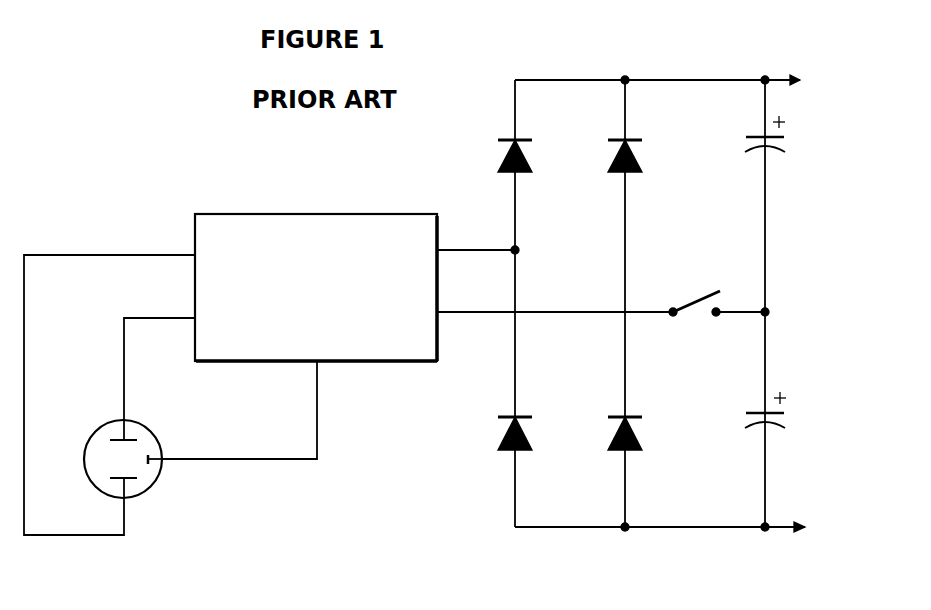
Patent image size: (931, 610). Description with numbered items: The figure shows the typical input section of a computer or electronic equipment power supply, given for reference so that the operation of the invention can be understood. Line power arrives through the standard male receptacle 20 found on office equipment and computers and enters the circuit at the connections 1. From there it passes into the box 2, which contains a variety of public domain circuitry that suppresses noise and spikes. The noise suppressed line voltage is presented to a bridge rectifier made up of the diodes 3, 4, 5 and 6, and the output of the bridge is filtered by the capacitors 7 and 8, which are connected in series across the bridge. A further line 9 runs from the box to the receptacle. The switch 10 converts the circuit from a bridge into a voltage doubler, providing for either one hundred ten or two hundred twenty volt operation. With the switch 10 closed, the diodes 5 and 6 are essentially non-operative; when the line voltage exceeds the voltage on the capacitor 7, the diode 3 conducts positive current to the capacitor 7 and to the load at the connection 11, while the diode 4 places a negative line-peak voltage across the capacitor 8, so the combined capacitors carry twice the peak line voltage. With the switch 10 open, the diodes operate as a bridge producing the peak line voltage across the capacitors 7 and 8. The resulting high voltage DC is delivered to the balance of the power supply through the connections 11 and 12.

The connections 1 is at (157, 257).
The box 2 is at (237, 214).
The diode 3 is at (522, 152).
The diode 4 is at (530, 432).
The diode 5 is at (633, 152).
The diode 6 is at (638, 432).
The capacitor 7 is at (752, 135).
The capacitor 8 is at (752, 411).
The control line 9 is at (317, 459).
The switch 10 is at (700, 301).
The connection 11 is at (791, 76).
The connection 12 is at (790, 533).
The male receptacle 20 is at (146, 486).